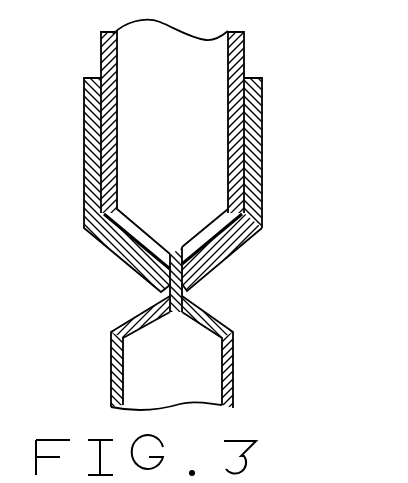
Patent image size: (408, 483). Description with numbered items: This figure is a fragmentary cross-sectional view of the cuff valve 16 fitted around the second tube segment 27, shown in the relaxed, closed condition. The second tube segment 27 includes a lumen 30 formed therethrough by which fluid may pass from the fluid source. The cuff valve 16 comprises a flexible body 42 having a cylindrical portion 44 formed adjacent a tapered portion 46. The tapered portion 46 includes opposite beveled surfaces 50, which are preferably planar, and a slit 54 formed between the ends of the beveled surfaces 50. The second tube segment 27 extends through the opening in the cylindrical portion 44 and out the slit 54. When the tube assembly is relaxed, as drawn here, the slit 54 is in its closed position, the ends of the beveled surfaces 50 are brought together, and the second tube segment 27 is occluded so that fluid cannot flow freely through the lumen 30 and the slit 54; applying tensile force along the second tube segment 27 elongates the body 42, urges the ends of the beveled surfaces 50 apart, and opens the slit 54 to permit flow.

The cuff valve 16 is at (262, 188).
The second tube segment 27 is at (91, 56).
The lumen 30 is at (203, 58).
The flexible body 42 is at (256, 231).
The cylindrical portion 44 is at (262, 133).
The tapered portion 46 is at (229, 280).
The beveled surfaces 50 is at (250, 246).
The slit 54 is at (205, 284).